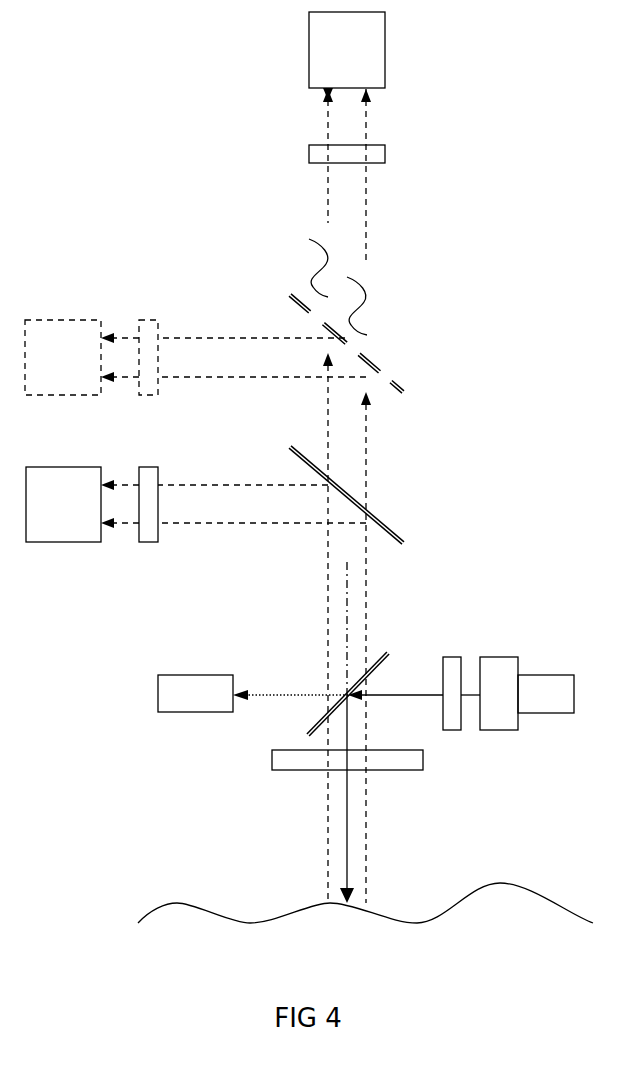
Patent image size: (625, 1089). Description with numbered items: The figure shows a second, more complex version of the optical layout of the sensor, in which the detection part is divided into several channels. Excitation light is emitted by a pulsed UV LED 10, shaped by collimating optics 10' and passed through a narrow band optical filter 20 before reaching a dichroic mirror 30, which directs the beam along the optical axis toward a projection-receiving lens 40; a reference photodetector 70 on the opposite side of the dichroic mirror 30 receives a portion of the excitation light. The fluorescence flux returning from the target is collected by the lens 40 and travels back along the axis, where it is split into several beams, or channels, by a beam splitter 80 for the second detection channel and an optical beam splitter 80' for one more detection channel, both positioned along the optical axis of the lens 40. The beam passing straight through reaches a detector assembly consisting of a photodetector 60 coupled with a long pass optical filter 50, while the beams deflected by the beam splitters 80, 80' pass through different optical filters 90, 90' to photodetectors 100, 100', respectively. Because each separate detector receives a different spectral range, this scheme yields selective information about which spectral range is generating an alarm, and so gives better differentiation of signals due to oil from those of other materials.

The pulsed UV LED 10 is at (546, 694).
The collimating optics 10' is at (498, 693).
The narrow band optical filter 20 is at (452, 670).
The dichroic mirror 30 is at (358, 683).
The projection-receiving lens 40 is at (314, 759).
The long pass optical filter 50 is at (313, 152).
The photodetector 60 is at (347, 50).
The reference photodetector 70 is at (195, 693).
The beam splitter for the second detection channel 80 is at (378, 496).
The optical beam splitter for one more detection channel 80' is at (381, 352).
The optical filter 90 is at (149, 482).
The optical filter 90' is at (151, 335).
The photodetector 100 is at (63, 504).
The photodetector 100' is at (63, 357).